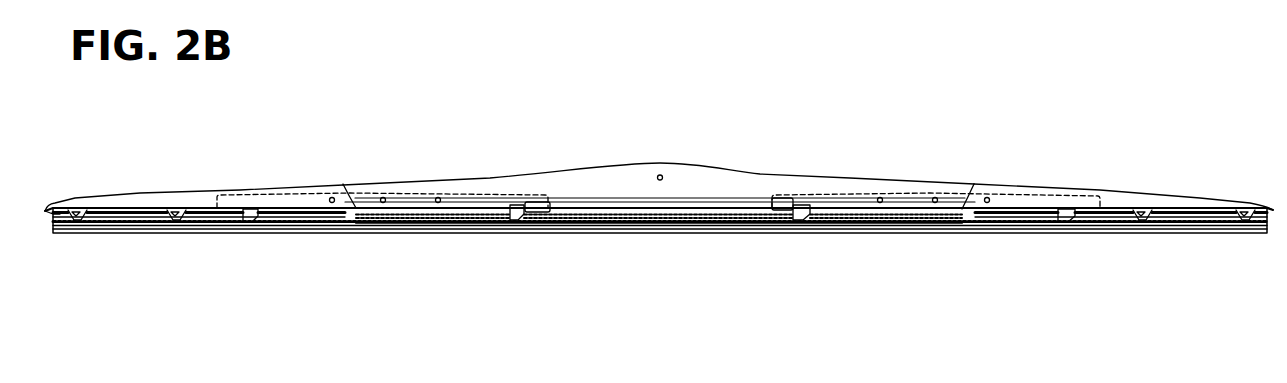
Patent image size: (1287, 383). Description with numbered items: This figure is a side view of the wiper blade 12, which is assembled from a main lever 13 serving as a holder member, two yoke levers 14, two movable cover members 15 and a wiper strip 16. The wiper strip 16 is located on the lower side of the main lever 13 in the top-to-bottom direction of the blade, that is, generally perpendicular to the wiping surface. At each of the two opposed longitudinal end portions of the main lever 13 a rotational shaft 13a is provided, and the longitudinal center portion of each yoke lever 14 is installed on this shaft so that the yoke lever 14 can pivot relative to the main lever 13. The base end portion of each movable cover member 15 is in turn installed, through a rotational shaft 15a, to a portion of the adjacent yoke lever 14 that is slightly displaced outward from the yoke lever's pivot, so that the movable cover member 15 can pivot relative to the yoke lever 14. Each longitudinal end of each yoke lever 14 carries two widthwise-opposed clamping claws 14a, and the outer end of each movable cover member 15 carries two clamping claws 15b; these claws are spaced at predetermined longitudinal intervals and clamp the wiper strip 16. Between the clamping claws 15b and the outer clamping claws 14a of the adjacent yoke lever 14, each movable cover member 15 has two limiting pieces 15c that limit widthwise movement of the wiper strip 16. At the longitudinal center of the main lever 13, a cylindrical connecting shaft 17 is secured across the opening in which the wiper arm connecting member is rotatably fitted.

The wiper blade 12 is at (787, 108).
The main lever 13 is at (800, 183).
The rotational shaft 13a is at (383, 188).
The yoke lever 14 is at (417, 181).
The clamping claw 14a is at (250, 225).
The movable cover member 15 is at (122, 192).
The rotational shaft 15a is at (327, 188).
The clamping claw 15b is at (75, 224).
The limiting piece 15c is at (178, 224).
The wiper strip 16 is at (656, 235).
The connecting shaft 17 is at (660, 173).